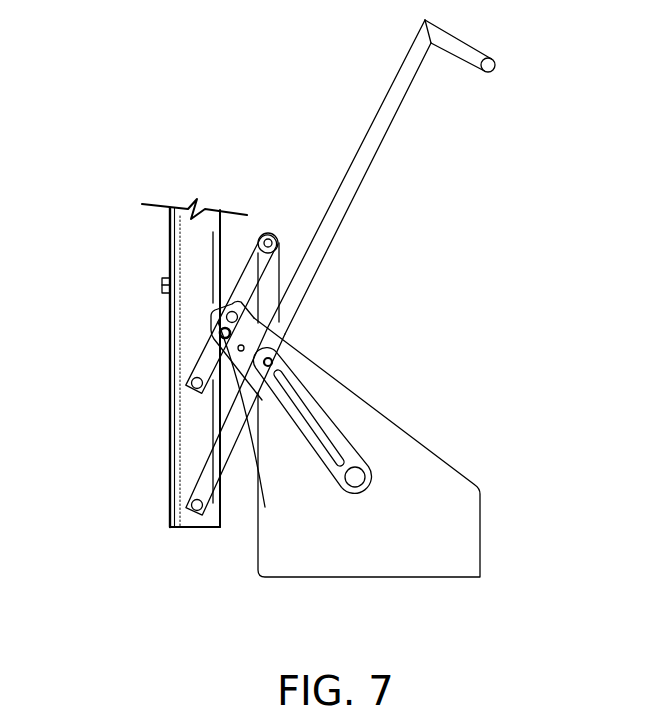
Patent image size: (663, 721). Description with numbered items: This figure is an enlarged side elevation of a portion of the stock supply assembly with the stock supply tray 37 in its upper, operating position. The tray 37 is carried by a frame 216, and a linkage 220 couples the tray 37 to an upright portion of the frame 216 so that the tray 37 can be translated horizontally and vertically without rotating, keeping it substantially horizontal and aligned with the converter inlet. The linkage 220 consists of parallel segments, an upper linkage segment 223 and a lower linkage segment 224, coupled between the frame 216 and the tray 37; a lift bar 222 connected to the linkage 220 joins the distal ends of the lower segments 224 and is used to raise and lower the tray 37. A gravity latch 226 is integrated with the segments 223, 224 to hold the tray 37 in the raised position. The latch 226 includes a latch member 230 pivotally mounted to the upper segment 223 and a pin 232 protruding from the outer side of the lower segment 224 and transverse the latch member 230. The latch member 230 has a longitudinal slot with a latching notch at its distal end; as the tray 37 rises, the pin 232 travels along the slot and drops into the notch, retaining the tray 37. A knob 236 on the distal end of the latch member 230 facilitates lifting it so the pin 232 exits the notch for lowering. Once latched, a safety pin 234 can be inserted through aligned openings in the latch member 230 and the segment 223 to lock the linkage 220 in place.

The stock supply tray 37 is at (463, 535).
The frame 216 is at (190, 245).
The linkage 220 is at (128, 327).
The lift bar 222 is at (488, 72).
The upper linkage segment 223 is at (205, 362).
The lower linkage segment 224 is at (220, 462).
The gravity latch 226 is at (400, 317).
The latch member 230 is at (336, 441).
The pin 232 is at (290, 375).
The safety pin 234 is at (357, 477).
The knob 236 is at (240, 325).